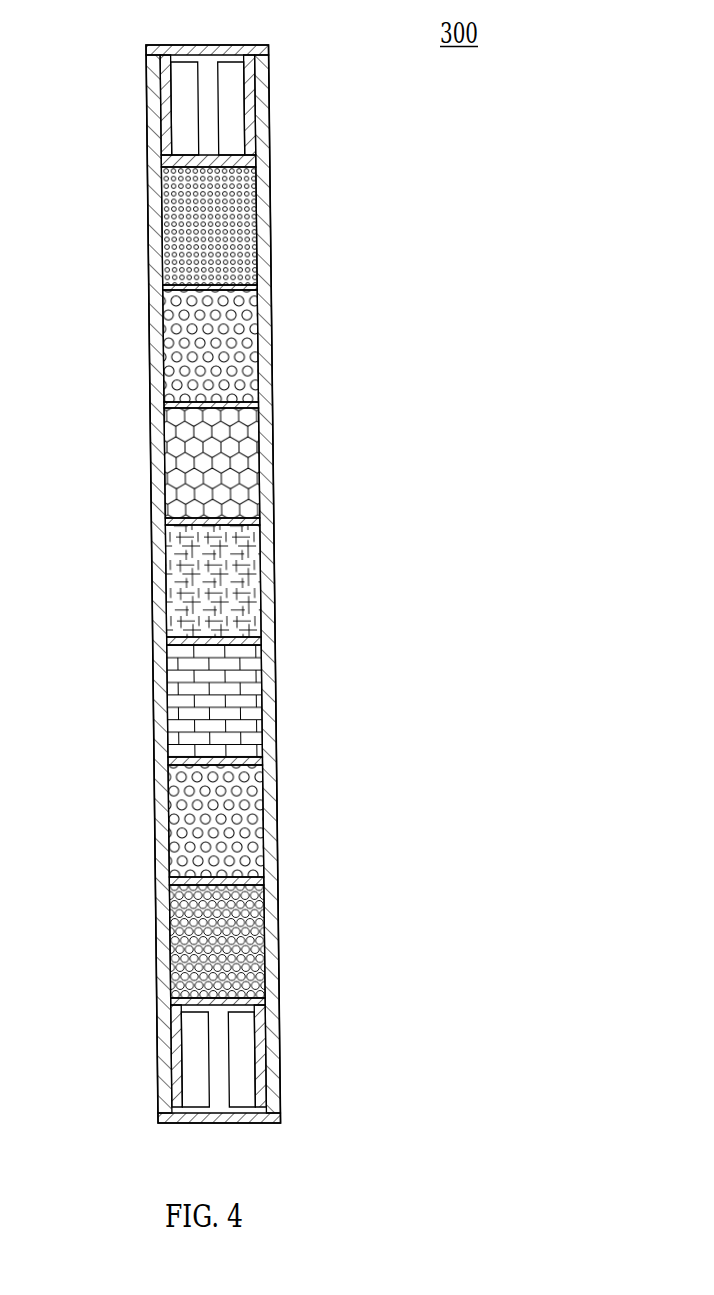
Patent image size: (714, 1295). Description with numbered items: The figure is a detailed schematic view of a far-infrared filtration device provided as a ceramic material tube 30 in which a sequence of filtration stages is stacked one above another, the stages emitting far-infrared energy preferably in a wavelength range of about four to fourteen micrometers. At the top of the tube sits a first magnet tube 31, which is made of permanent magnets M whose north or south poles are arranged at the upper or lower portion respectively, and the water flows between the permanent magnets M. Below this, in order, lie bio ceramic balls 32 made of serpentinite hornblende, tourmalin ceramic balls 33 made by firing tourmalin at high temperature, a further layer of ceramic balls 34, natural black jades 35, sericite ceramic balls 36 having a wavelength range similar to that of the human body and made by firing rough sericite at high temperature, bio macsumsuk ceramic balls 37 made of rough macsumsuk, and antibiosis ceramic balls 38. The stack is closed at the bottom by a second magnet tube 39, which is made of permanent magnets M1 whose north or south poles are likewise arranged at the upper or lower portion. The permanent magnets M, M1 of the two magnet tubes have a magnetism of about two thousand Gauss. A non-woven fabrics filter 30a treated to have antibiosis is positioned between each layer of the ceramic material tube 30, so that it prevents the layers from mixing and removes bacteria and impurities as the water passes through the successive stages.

The ceramic material tube 30 is at (275, 432).
The non-woven fabrics filter 30a is at (233, 165).
The first magnet tube 31 is at (167, 60).
The permanent magnets M is at (213, 91).
The bio ceramic balls 32 is at (173, 224).
The tourmalin ceramic balls 33 is at (235, 337).
The third filter layer (honeycomb) 34 is at (195, 463).
The natural black jades 35 is at (235, 577).
The sericite ceramic balls 36 is at (195, 698).
The bio macsumsuk ceramic balls 37 is at (242, 823).
The antibiosis ceramic balls 38 is at (185, 942).
The second magnet tube 39 is at (177, 1110).
The permanent magnets M1 is at (218, 1058).